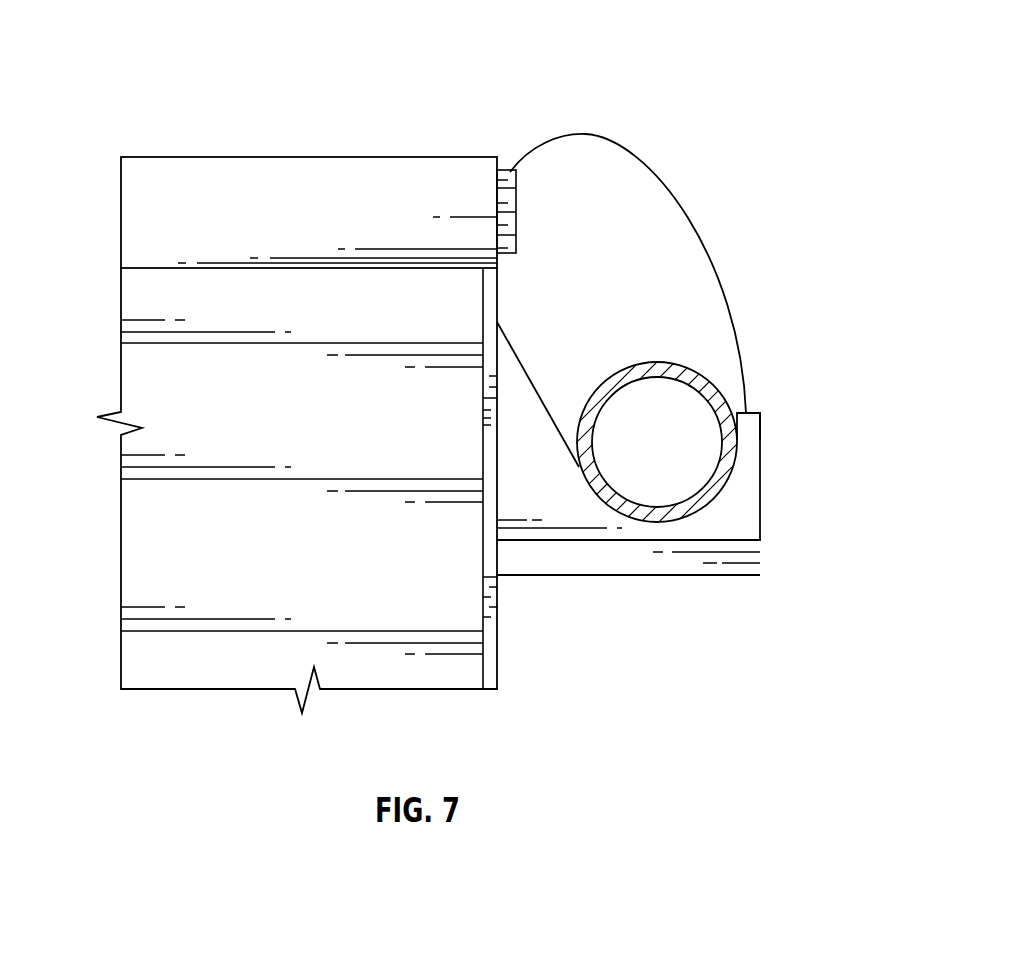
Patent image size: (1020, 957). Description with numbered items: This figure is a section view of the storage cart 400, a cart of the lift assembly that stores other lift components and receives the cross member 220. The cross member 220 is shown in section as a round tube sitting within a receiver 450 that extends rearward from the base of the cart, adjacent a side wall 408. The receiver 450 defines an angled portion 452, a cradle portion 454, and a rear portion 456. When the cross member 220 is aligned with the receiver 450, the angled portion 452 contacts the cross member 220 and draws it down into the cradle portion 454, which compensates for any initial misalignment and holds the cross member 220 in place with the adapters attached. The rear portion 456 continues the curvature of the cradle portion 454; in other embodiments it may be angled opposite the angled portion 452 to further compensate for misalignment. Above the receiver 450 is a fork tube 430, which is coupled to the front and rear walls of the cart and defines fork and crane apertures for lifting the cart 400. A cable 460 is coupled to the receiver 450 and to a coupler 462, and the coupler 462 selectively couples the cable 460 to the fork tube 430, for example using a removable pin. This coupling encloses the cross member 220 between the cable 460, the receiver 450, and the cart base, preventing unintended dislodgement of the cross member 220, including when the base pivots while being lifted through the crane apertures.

The storage cart 400 is at (722, 58).
The fork tube 430 is at (218, 178).
The coupler 462 is at (515, 197).
The side wall 408 is at (306, 430).
The receiver 450 is at (568, 493).
The angled portion 452 is at (522, 360).
The cross member 220 is at (728, 468).
The rear portion 456 is at (738, 438).
The cradle portion 454 is at (658, 522).
The cable 460 is at (710, 235).